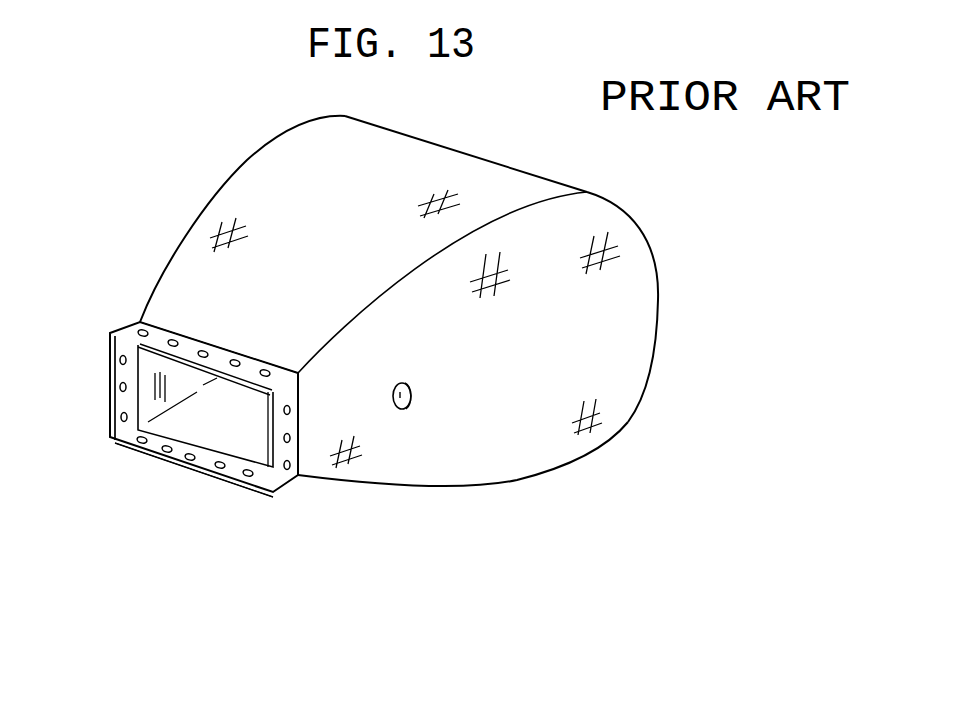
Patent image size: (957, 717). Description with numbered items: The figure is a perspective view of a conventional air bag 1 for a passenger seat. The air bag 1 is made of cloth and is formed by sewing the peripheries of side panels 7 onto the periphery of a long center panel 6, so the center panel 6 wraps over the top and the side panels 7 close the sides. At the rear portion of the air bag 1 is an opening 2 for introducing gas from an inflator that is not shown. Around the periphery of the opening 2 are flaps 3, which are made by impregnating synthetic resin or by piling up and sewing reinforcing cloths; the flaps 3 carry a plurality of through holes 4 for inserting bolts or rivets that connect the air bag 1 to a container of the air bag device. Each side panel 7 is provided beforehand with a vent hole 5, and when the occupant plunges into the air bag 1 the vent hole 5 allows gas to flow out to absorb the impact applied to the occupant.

The air bag 1 is at (524, 156).
The opening 2 is at (190, 425).
The flaps 3 is at (120, 400).
The mounting hole 4 is at (120, 360).
The vent hole 5 is at (403, 383).
The center panel 6 is at (415, 157).
The side panels 7 is at (480, 466).